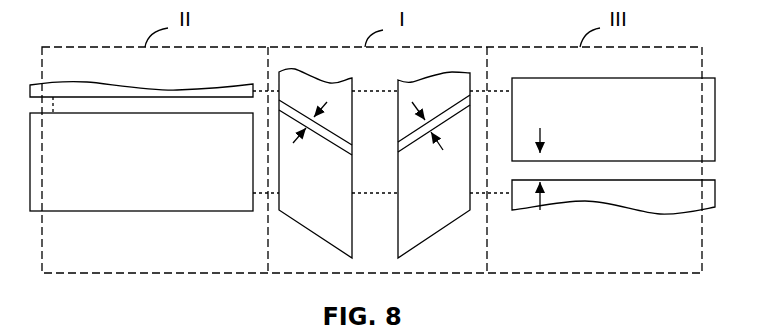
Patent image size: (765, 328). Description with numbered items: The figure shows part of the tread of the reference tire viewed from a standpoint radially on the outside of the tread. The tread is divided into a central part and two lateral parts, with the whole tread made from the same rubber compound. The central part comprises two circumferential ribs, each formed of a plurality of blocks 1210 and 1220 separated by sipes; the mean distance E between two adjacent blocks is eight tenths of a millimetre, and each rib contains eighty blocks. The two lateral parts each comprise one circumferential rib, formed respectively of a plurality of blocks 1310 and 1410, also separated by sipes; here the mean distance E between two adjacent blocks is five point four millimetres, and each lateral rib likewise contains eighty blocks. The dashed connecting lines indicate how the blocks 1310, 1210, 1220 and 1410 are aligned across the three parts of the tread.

The block 1310 is at (113, 168).
The block 1210 is at (291, 197).
The block 1220 is at (409, 197).
The block 1410 is at (593, 125).